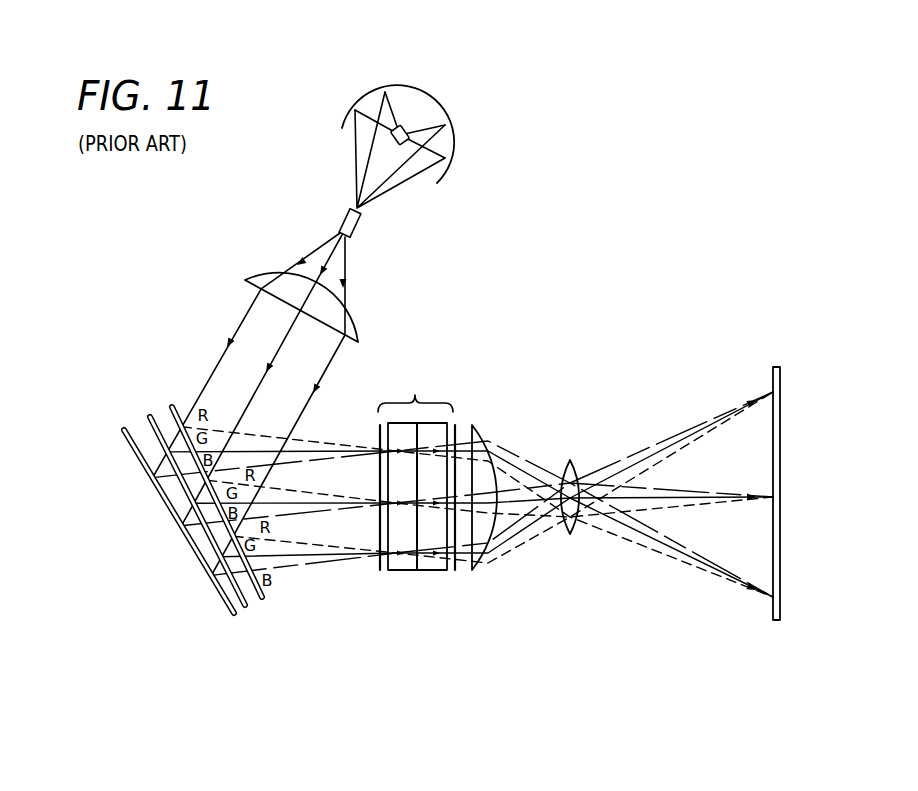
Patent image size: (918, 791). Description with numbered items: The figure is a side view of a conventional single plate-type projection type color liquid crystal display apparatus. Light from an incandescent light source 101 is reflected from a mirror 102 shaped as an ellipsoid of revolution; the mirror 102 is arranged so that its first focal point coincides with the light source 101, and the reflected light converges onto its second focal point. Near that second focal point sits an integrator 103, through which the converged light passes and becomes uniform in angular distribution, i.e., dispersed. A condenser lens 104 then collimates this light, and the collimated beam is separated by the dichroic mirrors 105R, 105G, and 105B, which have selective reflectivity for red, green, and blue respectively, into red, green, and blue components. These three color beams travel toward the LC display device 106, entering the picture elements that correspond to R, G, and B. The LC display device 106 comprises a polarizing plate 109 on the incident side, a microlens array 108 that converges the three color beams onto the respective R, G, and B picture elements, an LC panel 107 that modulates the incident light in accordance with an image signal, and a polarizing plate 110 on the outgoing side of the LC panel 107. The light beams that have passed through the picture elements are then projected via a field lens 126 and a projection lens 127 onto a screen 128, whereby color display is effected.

The incandescent light source 101 is at (400, 126).
The mirror 102 is at (437, 105).
The integrator 103 is at (343, 213).
The condenser lens 104 is at (246, 284).
The dichroic mirror 105R is at (170, 405).
The dichroic mirror 105G is at (148, 416).
The dichroic mirror 105B is at (122, 428).
The LC display device 106 is at (415, 387).
The LC panel 107 is at (430, 573).
The microlens array 108 is at (402, 573).
The polarizing plate 109 is at (380, 432).
The polarizing plate 110 is at (456, 428).
The field lens 126 is at (478, 563).
The projection lens 127 is at (577, 535).
The screen 128 is at (777, 622).